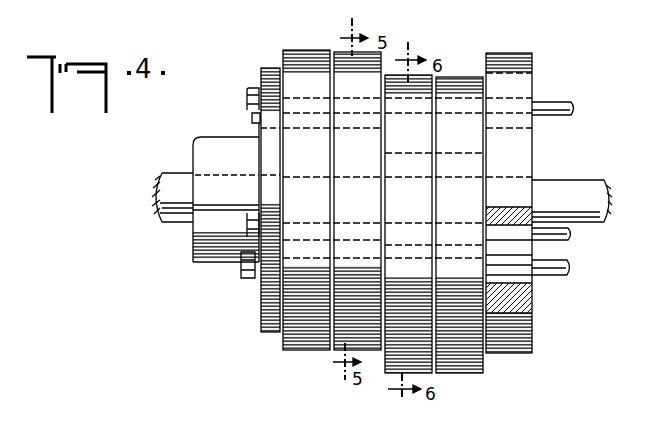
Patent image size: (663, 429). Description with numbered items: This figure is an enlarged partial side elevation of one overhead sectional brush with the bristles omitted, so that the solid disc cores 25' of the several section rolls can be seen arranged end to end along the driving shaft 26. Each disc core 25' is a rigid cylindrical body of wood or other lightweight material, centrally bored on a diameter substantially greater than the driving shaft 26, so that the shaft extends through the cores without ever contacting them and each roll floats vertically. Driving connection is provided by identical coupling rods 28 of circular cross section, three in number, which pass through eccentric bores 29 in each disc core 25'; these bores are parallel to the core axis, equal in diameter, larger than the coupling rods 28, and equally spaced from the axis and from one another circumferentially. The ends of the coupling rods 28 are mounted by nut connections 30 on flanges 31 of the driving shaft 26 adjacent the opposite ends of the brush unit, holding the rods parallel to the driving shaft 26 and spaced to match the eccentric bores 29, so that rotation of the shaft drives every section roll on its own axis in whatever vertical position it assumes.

The disc core 25' is at (396, 211).
The driving shaft 26 is at (163, 188).
The coupling rod 28 is at (246, 100).
The eccentric bore 29 is at (515, 264).
The nut connection 30 is at (251, 121).
The flange 31 is at (205, 150).